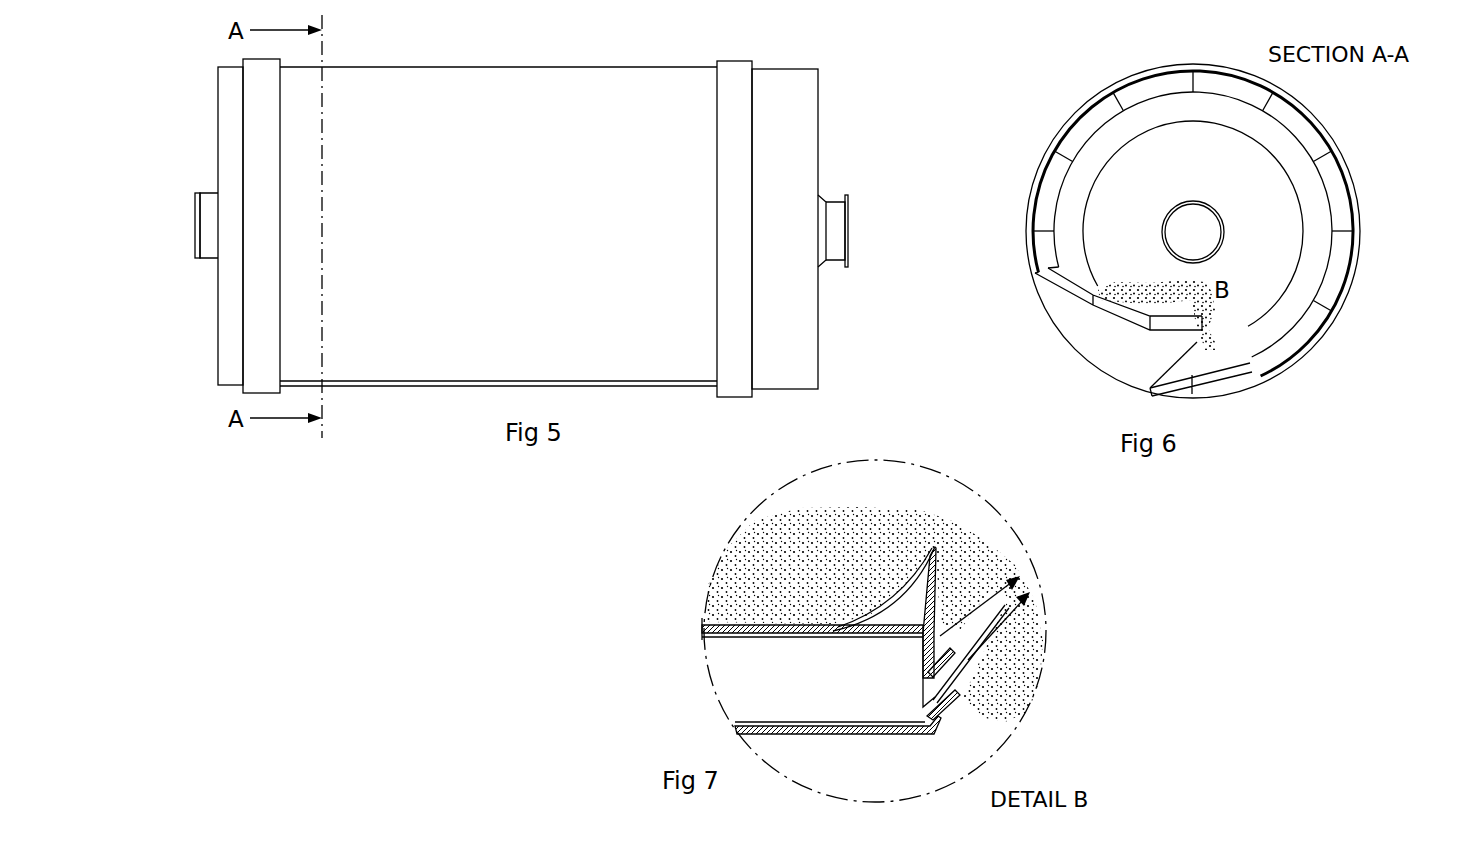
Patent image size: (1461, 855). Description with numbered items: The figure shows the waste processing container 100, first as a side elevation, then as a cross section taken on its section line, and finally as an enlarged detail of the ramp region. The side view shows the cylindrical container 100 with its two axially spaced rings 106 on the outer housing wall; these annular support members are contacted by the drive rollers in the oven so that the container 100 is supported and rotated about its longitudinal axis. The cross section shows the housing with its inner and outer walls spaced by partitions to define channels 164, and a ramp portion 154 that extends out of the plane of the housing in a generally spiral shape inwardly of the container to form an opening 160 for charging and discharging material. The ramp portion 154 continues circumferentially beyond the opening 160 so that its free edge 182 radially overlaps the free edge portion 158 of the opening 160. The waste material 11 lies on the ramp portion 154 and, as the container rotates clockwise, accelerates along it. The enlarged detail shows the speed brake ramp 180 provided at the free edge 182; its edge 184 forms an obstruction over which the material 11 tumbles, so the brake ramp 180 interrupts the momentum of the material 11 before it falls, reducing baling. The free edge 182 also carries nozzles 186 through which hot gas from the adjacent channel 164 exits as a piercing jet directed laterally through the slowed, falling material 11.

In FIG. 5, the processing container 100 is at (363, 362).
In FIG. 5, the rings 106 is at (265, 89).
In FIG. 6, the ramp portion 154 is at (1095, 295).
In FIG. 6, the waste material 11 is at (1150, 283).
In FIG. 7, the waste material 11 is at (792, 537).
In FIG. 6, the opening 160 is at (1153, 343).
In FIG. 6, the free edge portion 158 is at (1187, 398).
In FIG. 7, the channels 164 is at (770, 670).
In FIG. 7, the speed brake ramp 180 is at (890, 592).
In FIG. 7, the free edge 182 is at (950, 630).
In FIG. 7, the edge 184 is at (945, 555).
In FIG. 7, the nozzles 186 is at (955, 693).